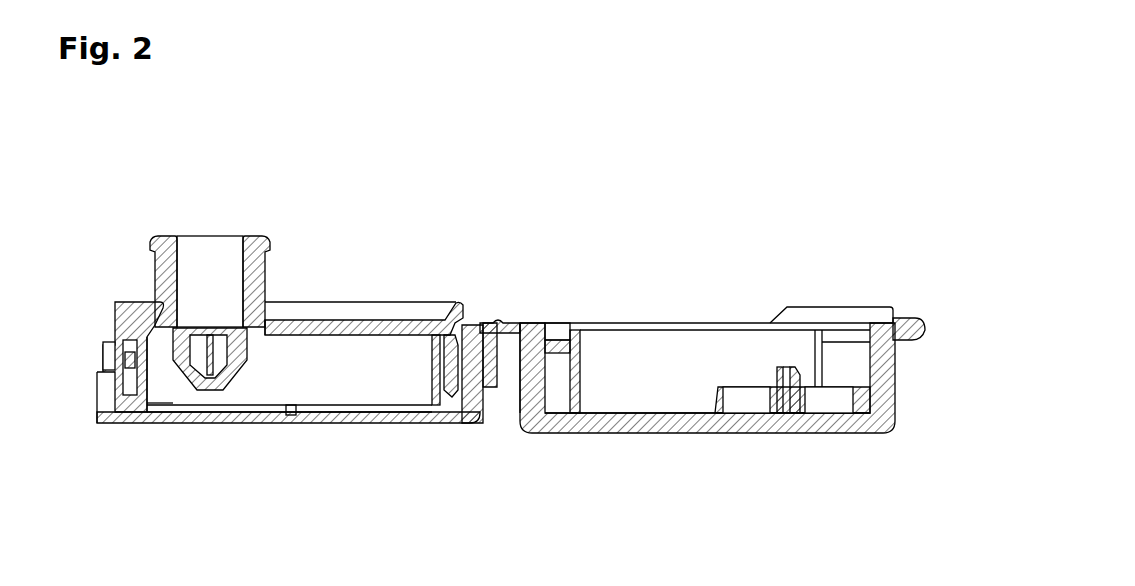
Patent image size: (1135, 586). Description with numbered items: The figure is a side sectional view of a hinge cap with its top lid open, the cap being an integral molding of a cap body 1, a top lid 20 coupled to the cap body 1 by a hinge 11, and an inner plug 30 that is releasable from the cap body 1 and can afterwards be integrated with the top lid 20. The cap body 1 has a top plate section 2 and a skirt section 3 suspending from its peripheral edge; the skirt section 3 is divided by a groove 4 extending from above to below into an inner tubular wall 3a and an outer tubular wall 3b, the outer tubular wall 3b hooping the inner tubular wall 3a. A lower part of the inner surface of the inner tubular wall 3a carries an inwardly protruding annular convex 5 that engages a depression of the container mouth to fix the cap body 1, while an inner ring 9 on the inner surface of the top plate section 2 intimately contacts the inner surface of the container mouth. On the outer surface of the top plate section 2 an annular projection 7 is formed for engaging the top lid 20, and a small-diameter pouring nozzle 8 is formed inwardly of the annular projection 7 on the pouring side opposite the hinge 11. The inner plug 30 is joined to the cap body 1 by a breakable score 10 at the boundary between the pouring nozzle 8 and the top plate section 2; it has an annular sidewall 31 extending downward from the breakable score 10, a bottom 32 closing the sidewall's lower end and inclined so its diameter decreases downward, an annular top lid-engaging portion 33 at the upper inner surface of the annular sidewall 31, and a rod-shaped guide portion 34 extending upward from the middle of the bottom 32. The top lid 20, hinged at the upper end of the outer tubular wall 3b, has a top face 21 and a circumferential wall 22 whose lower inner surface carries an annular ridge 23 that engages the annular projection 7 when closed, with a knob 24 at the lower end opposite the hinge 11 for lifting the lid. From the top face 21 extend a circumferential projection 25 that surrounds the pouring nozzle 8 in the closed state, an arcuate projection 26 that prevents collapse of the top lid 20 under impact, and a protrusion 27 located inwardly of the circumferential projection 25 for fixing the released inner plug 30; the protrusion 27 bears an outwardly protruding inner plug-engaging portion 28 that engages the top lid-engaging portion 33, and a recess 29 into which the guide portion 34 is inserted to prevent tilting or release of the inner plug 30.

The cap body 1 is at (279, 204).
The top plate section 2 is at (393, 322).
The skirt section 3 is at (505, 518).
The inner tubular wall 3a is at (444, 420).
The outer tubular wall 3b is at (497, 432).
The groove 4 is at (470, 418).
The annular convex 5 is at (133, 422).
The annular projection 7 is at (118, 305).
The pouring nozzle 8 is at (166, 238).
The inner ring 9 is at (418, 386).
The breakable score 10 is at (265, 328).
The hinge 11 is at (506, 321).
The top lid 20 is at (907, 423).
The top face 21 is at (683, 435).
The circumferential wall 22 is at (523, 436).
The annular ridge 23 is at (559, 345).
The knob 24 is at (920, 330).
The circumferential projection 25 is at (860, 432).
The arcuate projection 26 is at (578, 365).
The protrusion 27 is at (812, 432).
The inner plug-engaging portion 28 is at (778, 382).
The recess 29 is at (788, 378).
The inner plug 30 is at (243, 378).
The annular sidewall 31 is at (160, 392).
The bottom 32 is at (230, 392).
The top lid-engaging portion 33 is at (194, 322).
The guide portion 34 is at (192, 386).